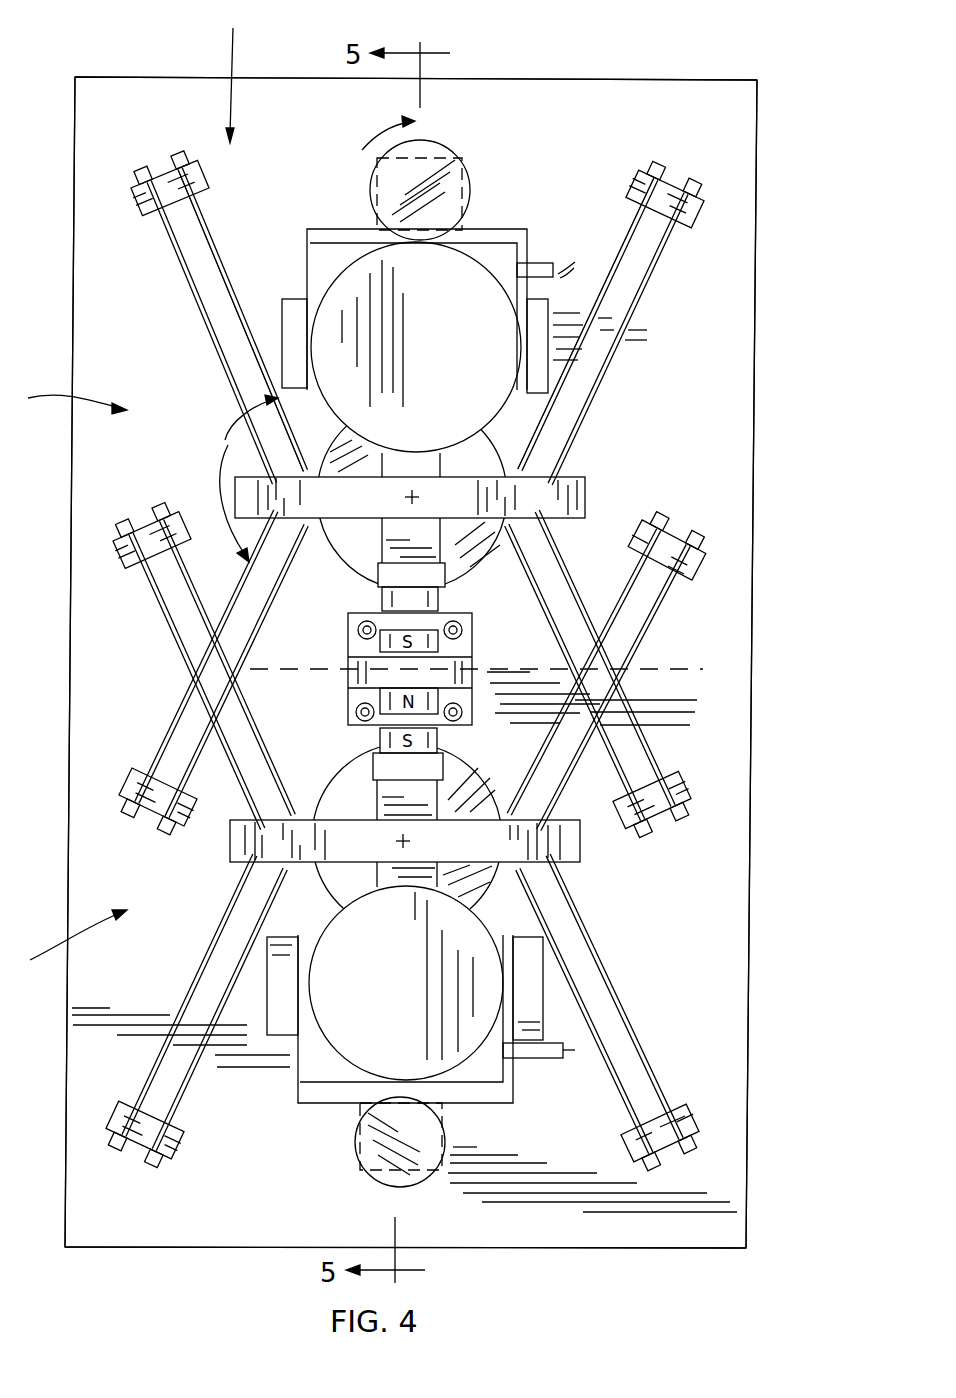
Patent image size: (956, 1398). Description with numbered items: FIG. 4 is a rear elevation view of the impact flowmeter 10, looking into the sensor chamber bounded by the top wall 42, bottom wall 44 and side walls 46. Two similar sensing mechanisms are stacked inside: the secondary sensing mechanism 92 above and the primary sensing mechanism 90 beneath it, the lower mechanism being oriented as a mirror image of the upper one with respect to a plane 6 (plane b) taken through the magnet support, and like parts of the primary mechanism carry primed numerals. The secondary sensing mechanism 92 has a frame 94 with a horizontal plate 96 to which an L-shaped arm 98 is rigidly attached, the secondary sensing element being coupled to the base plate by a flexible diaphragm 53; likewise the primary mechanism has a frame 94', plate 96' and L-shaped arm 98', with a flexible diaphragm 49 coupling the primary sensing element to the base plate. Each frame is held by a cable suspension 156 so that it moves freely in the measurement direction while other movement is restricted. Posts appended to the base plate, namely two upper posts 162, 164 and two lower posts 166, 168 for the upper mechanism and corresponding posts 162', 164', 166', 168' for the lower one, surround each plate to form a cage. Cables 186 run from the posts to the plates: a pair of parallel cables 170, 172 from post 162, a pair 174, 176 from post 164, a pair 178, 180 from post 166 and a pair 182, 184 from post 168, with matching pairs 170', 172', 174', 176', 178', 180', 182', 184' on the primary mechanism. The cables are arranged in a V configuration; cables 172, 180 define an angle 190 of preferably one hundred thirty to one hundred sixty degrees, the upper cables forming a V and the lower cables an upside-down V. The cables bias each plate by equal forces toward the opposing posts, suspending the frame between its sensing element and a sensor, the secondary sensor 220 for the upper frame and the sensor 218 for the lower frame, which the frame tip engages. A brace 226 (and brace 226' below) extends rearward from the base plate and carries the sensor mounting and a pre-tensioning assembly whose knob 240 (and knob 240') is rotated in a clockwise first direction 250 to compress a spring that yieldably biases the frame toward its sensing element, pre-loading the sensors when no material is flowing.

The impact flowmeter 10 is at (778, 135).
The top wall 42 is at (612, 79).
The bottom wall 44 is at (185, 1249).
The side walls 46 is at (68, 560).
The primary sensing mechanism 90 is at (67, 935).
The secondary sensing mechanism 92 is at (68, 394).
The cable suspension 156 is at (233, 72).
The upper post 162 is at (208, 183).
The upper post 164 is at (630, 190).
The upper post 162' is at (158, 525).
The upper post 164' is at (676, 536).
The lower post 166 is at (149, 779).
The lower post 168 is at (663, 790).
The lower post 166' is at (131, 1123).
The lower post 168' is at (670, 1121).
The cable 170 is at (205, 320).
The cable 172 is at (214, 333).
The cable 174 is at (640, 339).
The cable 176 is at (588, 324).
The cable 178 is at (246, 671).
The cable 180 is at (206, 624).
The cable 182 is at (570, 672).
The cable 184 is at (605, 658).
The cable 170' is at (181, 681).
The cable 172' is at (242, 668).
The cable 174' is at (633, 687).
The cable 176' is at (574, 672).
The cable 178' is at (219, 1009).
The cable 180' is at (167, 995).
The cable 182' is at (584, 1011).
The cable 184' is at (632, 997).
The cables 186 is at (195, 243).
The angle 190 is at (245, 430).
The horizontal plate 96 is at (435, 484).
The horizontal plate 96' is at (437, 846).
The frame 94 is at (398, 561).
The frame 94' is at (395, 777).
The L-shaped arm 98 is at (412, 451).
The L-shaped arm 98' is at (407, 885).
The flexible diaphragm 49 is at (478, 897).
The flexible diaphragm 53 is at (465, 567).
The secondary sensor 220 is at (482, 362).
The sensor 218 is at (386, 979).
The brace 226 is at (394, 333).
The brace 226' is at (378, 1009).
The knob 240 is at (450, 175).
The knob 240' is at (379, 1149).
The clockwise first direction 250 is at (368, 140).
The plane b 6 is at (483, 657).